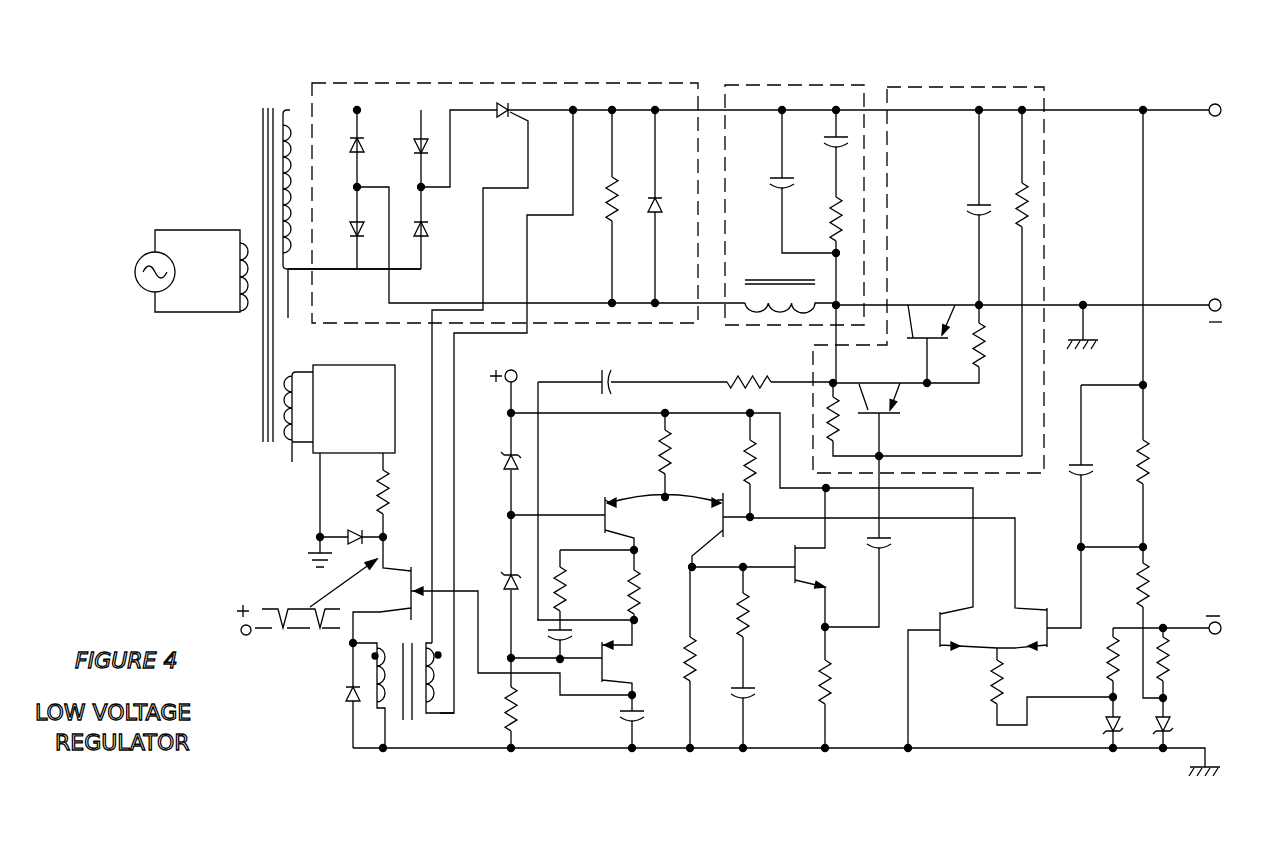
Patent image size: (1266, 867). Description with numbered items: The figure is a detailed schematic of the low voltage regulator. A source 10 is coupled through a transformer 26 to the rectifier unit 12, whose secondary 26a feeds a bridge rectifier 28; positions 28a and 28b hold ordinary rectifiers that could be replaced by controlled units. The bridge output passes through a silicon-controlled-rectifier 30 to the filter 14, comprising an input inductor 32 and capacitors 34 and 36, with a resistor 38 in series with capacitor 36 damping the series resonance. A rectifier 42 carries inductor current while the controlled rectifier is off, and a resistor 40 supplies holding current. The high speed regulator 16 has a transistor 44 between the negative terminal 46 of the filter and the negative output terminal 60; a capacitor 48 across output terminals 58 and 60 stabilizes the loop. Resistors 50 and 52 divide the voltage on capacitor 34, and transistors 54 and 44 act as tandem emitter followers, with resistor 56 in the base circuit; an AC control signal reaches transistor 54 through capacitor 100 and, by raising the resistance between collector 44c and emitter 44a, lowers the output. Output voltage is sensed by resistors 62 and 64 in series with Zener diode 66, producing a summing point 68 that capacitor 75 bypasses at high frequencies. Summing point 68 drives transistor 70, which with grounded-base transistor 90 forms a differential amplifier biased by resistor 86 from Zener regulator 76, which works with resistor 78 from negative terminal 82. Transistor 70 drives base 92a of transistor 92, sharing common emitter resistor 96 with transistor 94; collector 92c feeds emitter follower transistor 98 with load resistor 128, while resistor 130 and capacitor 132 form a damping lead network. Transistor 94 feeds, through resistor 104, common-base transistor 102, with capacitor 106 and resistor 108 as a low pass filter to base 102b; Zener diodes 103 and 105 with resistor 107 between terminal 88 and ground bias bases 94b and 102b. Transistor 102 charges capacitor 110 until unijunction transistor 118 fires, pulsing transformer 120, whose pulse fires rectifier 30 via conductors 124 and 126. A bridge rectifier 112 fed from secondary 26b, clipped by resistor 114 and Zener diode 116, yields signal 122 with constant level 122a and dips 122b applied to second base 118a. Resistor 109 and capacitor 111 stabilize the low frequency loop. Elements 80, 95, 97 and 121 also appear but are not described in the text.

The source 10 is at (143, 290).
The rectifier unit 12 is at (698, 83).
The filter 14 is at (864, 85).
The high speed regulator 16 is at (1044, 87).
The transformer 26 is at (324, 299).
The secondary 26a is at (350, 216).
The secondary 26b is at (294, 431).
The bridge rectifier 28 is at (516, 195).
The non-controlled rectifier position 28a is at (418, 152).
The non-controlled rectifier position 28b is at (426, 233).
The silicon-controlled-rectifier 30 is at (499, 114).
The input inductor 32 is at (783, 279).
The capacitor 34 is at (778, 189).
The capacitor 36 is at (833, 148).
The resistor 38 is at (833, 203).
The resistor 40 is at (616, 216).
The rectifier 42 is at (658, 213).
The transistor 44 is at (942, 326).
The emitter 44a is at (944, 318).
The collector 44c is at (915, 330).
The negative terminal 46 is at (828, 311).
The capacitor 48 is at (972, 204).
The resistor 50 is at (1024, 222).
The resistor 52 is at (834, 403).
The transistor 54 is at (885, 416).
The resistor 56 is at (985, 360).
The positive output terminal 58 is at (881, 114).
The negative output terminal 60 is at (1045, 301).
The resistor 62 is at (1152, 472).
The resistor 64 is at (1152, 575).
The temperature-compensated Zener diode 66 is at (1173, 724).
The summing point 68 is at (1078, 545).
The transistor 70 is at (1045, 621).
The capacitor 75 is at (1089, 474).
The Zener negative voltage regulator 76 is at (1104, 724).
The resistor 78 is at (1110, 644).
The resistor 80 is at (1173, 661).
The negative terminal 82 is at (1183, 628).
The resistor 86 is at (990, 678).
The terminal 88 is at (509, 383).
The transistor 90 is at (938, 617).
The transistor 92 is at (709, 532).
The base 92a is at (726, 526).
The collector 92c is at (721, 513).
The transistor 94 is at (572, 509).
The base 94b is at (604, 519).
The resistor 95 is at (694, 641).
The common emitter resistor 96 is at (662, 452).
The resistor 97 is at (741, 447).
The transistor 98 is at (801, 564).
The capacitor 100 is at (882, 549).
The transistor 102 is at (593, 673).
The base 102b is at (597, 663).
The Zener diode 103 is at (507, 459).
The resistor 104 is at (641, 595).
The Zener diode 105 is at (503, 578).
The capacitor 106 is at (558, 639).
The resistor 107 is at (513, 699).
The resistor 108 is at (566, 596).
The resistor 109 is at (750, 375).
The capacitor 110 is at (638, 704).
The capacitor 111 is at (600, 372).
The bridge rectifier 112 is at (313, 365).
The series resistor 114 is at (388, 484).
The Zener diode 116 is at (358, 531).
The unijunction transistor 118 is at (491, 614).
The second base 118a is at (398, 569).
The transformer 120 is at (380, 691).
The diode 121 is at (315, 692).
The clipped signal 122 is at (286, 622).
The constant level 122a is at (265, 607).
The dips 122b is at (318, 629).
The conductor 124 is at (485, 218).
The conductor 126 is at (530, 240).
The load resistor 128 is at (828, 691).
The resistor 130 is at (751, 618).
The capacitor 132 is at (748, 699).